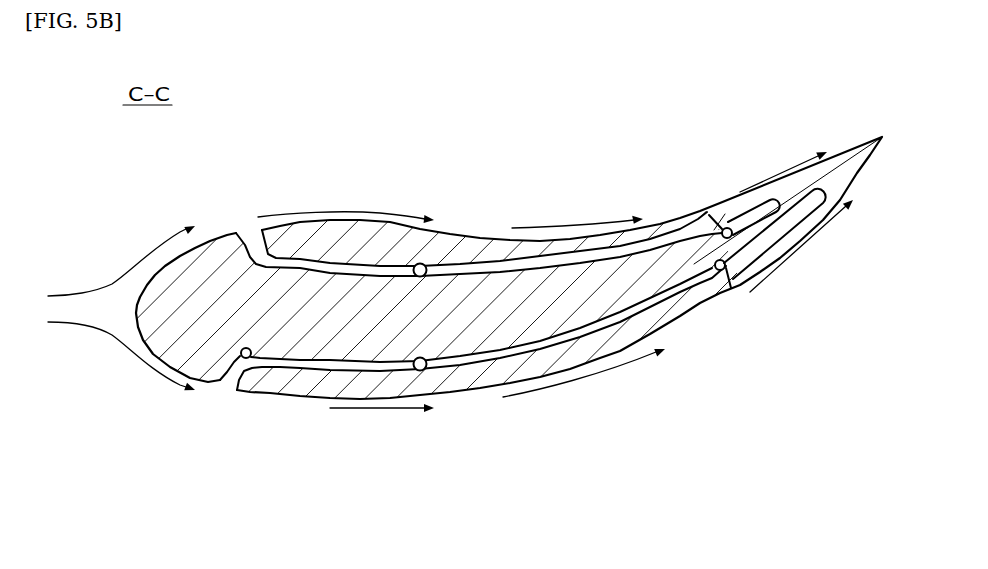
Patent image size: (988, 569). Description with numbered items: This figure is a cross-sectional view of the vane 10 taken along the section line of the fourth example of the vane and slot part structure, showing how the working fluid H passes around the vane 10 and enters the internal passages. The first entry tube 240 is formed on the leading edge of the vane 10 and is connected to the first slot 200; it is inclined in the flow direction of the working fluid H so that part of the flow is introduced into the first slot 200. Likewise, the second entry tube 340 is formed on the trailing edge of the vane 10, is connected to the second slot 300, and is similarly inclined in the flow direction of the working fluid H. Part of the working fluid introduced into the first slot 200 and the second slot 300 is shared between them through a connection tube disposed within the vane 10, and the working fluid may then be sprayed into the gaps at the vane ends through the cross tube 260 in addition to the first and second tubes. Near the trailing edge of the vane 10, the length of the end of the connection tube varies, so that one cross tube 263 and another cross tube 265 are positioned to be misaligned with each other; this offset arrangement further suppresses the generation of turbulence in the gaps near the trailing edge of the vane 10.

The vane 10 is at (460, 378).
The first slot 200 is at (257, 257).
The first entry tube 240 is at (250, 240).
The cross tube 260 is at (420, 263).
The cross tube 263 is at (772, 203).
The cross tube 265 is at (821, 205).
The second slot 300 is at (727, 228).
The second entry tube 340 is at (713, 216).
The working fluid H is at (134, 260).